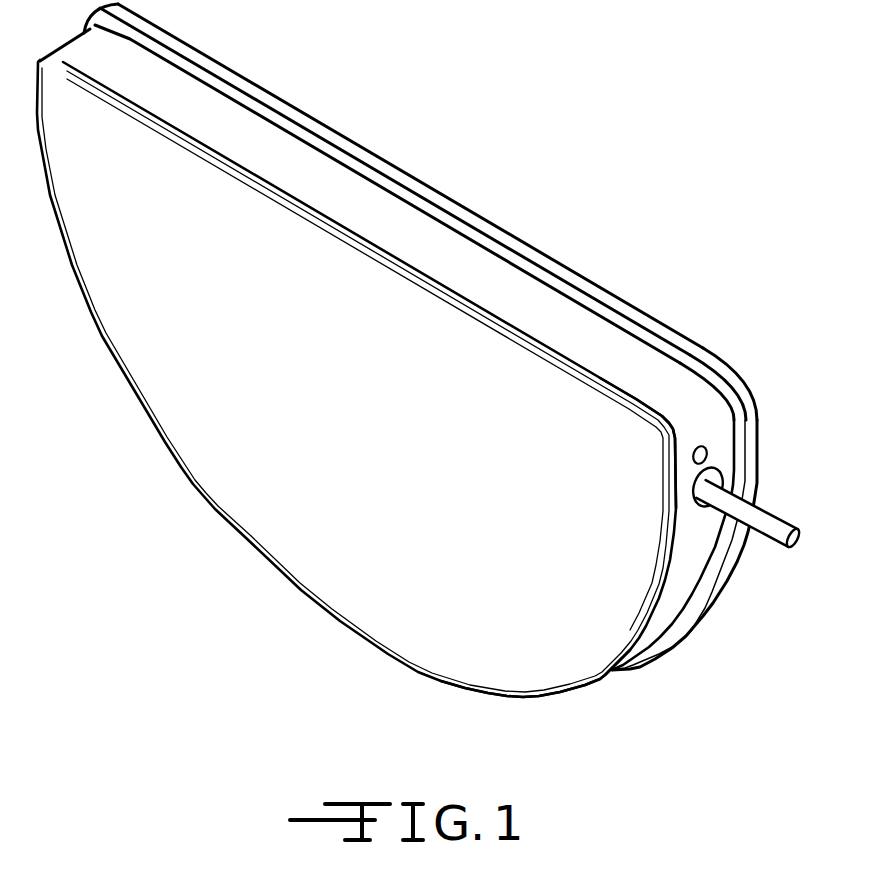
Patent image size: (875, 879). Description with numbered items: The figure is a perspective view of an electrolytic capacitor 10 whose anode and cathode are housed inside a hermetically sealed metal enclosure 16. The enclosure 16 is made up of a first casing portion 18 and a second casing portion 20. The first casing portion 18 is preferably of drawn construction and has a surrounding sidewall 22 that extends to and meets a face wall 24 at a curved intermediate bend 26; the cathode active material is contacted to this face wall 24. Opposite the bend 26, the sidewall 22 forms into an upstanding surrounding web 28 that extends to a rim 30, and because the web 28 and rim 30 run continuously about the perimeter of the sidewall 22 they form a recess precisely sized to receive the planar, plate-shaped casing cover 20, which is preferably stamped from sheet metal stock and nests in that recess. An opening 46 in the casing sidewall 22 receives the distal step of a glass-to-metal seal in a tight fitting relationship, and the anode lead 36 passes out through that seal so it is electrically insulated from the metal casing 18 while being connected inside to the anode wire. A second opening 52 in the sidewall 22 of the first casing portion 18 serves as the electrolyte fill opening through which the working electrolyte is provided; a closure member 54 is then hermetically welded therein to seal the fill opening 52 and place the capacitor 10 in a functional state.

The capacitor 10 is at (779, 245).
The enclosure 16 is at (548, 203).
The first casing portion 18 is at (607, 362).
The second casing portion 20 is at (717, 350).
The surrounding sidewall 22 is at (573, 327).
The face wall 24 is at (370, 608).
The curved intermediate bend 26 is at (547, 700).
The upstanding surrounding web 28 is at (475, 233).
The rim 30 is at (428, 193).
The anode lead 36 is at (780, 520).
The opening 46 is at (707, 507).
The opening 52 is at (677, 447).
The closure member 54 is at (705, 452).